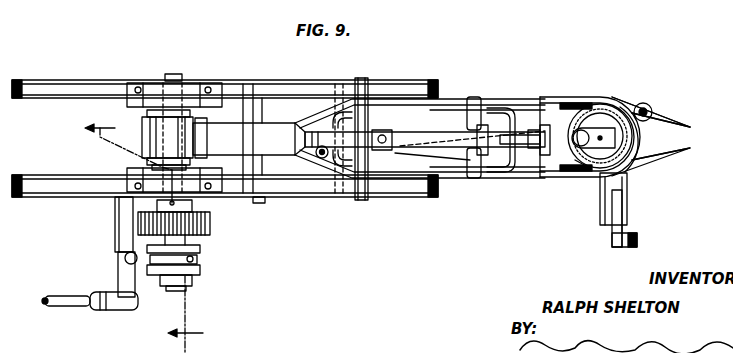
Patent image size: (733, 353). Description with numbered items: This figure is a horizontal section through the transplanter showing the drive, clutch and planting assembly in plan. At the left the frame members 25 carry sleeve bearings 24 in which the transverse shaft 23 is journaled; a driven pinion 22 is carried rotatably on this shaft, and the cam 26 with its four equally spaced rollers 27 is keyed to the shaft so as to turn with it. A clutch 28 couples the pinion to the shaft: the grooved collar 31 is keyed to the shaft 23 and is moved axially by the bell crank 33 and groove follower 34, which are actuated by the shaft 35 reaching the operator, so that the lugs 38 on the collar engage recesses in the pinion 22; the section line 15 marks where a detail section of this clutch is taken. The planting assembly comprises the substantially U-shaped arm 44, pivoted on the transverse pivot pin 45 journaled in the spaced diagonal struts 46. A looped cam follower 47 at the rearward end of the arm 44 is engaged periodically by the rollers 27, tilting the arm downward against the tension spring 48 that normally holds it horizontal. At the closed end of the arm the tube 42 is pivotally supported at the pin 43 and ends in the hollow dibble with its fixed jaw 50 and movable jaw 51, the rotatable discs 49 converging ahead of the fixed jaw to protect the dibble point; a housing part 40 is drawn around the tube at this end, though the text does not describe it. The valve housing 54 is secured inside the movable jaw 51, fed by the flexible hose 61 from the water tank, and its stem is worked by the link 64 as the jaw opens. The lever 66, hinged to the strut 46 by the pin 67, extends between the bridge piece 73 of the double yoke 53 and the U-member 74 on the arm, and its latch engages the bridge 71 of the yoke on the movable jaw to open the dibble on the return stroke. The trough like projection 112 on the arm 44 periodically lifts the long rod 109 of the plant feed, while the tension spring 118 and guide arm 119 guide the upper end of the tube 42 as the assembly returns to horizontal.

The section line 15 is at (144, 228).
The driven pinion 22 is at (210, 223).
The transverse shaft 23 is at (178, 78).
The sleeve bearings 24 is at (157, 89).
The frame members 25 is at (58, 88).
The cam 26 is at (160, 177).
The rollers 27 is at (180, 145).
The clutch 28 is at (142, 244).
The grooved collar 31 is at (202, 271).
The bell crank 33 is at (120, 266).
The groove follower 34 is at (200, 262).
The shaft 35 is at (63, 300).
The lugs 38 is at (200, 249).
The housing 40 is at (555, 112).
The tube 42 is at (597, 104).
The pivot pin 43 is at (577, 103).
The U-shaped arm 44 is at (320, 110).
The transverse pivot pin 45 is at (262, 201).
The diagonal struts 46 is at (341, 199).
The looped cam follower 47 is at (262, 131).
The tension spring 48 is at (652, 118).
The discs 49 is at (660, 135).
The fixed jaw 50 is at (640, 166).
The movable jaw 51 is at (595, 170).
The double yoke 53 is at (512, 108).
The valve housing 54 is at (644, 103).
The flexible hose 61 is at (440, 160).
The link 64 is at (606, 128).
The lever 66 is at (418, 131).
The pin 67 is at (350, 126).
The bridge 71 is at (545, 150).
The bridge piece 73 is at (470, 112).
The U-member 74 is at (482, 125).
The long rod 109 is at (638, 239).
The trough like projection 112 is at (626, 212).
The tension spring 118 is at (548, 130).
The guide arm 119 is at (520, 150).